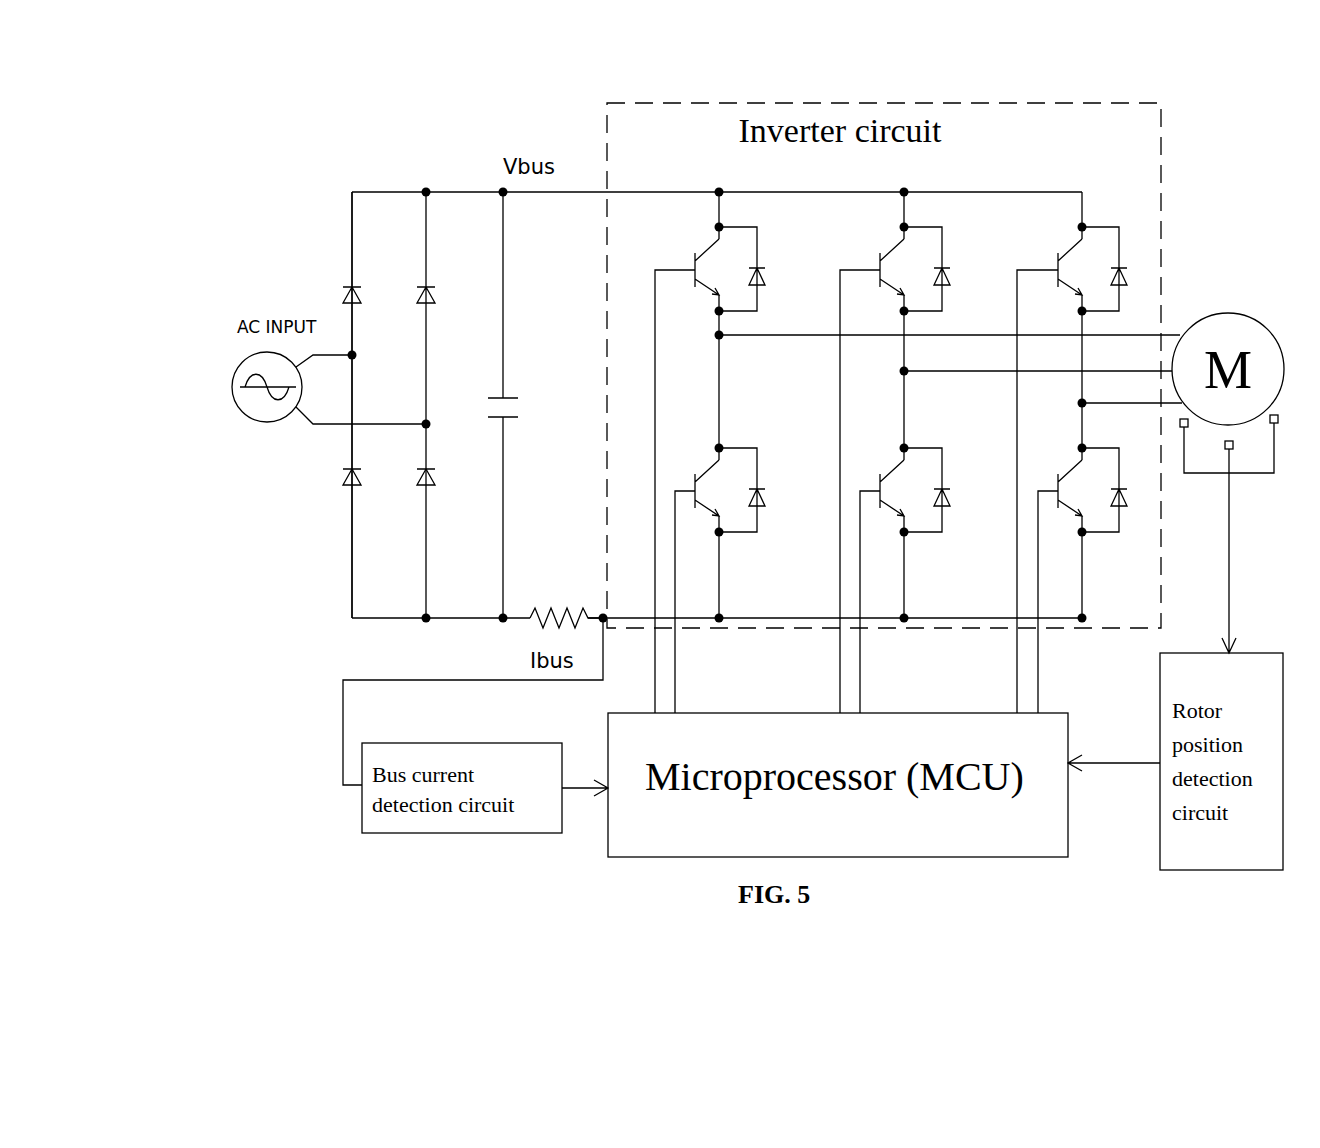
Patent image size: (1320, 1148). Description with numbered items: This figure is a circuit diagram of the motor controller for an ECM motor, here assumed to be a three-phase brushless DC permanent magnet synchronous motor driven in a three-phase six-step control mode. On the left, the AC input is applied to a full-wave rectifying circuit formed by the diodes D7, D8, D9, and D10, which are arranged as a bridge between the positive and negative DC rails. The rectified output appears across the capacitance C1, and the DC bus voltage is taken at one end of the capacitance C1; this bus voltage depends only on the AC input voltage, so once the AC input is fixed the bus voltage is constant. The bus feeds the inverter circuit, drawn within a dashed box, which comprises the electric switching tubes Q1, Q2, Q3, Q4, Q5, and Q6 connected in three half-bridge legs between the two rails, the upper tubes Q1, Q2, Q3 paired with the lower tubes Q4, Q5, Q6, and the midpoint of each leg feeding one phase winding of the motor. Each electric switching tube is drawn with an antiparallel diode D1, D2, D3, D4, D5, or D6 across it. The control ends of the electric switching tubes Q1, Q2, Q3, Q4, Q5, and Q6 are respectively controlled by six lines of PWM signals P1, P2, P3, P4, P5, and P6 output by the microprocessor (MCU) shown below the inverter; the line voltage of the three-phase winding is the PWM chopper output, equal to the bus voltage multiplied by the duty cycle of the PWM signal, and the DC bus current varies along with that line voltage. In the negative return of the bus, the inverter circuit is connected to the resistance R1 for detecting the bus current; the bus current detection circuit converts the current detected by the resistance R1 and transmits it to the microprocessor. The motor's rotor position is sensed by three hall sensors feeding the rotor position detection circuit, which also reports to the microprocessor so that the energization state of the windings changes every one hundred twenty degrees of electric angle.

The diode D7 is at (372, 405).
The diode D8 is at (443, 405).
The diode D9 is at (372, 478).
The diode D10 is at (450, 476).
The capacitance C1 is at (515, 405).
The resistance R1 is at (566, 597).
The electric switching tube Q1 is at (697, 267).
The electric switching tube Q2 is at (883, 269).
The electric switching tube Q3 is at (1065, 267).
The electric switching tube Q4 is at (697, 487).
The electric switching tube Q5 is at (888, 485).
The electric switching tube Q6 is at (1065, 487).
The freewheeling diode D1 is at (763, 269).
The freewheeling diode D2 is at (947, 269).
The freewheeling diode D3 is at (1121, 269).
The freewheeling diode D4 is at (759, 490).
The freewheeling diode D5 is at (943, 490).
The freewheeling diode D6 is at (1122, 490).
The PWM signal P1 is at (657, 491).
The PWM signal P2 is at (691, 602).
The PWM signal P3 is at (844, 491).
The PWM signal P4 is at (876, 602).
The PWM signal P5 is at (1016, 491).
The PWM signal P6 is at (1064, 602).